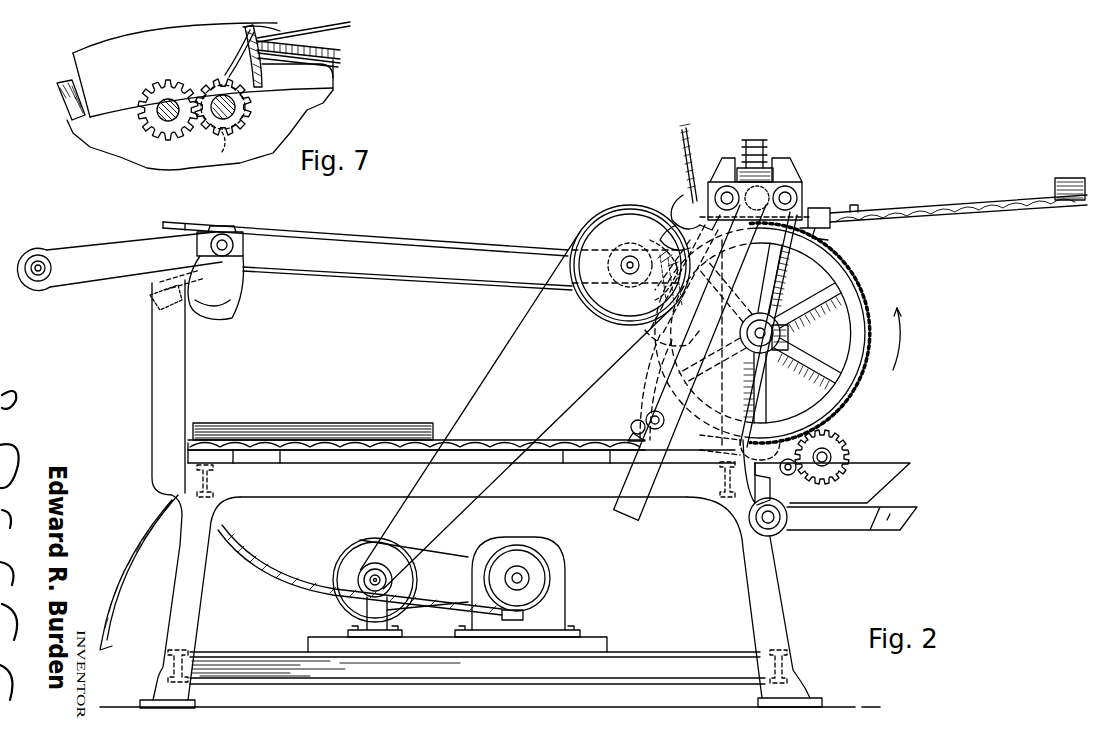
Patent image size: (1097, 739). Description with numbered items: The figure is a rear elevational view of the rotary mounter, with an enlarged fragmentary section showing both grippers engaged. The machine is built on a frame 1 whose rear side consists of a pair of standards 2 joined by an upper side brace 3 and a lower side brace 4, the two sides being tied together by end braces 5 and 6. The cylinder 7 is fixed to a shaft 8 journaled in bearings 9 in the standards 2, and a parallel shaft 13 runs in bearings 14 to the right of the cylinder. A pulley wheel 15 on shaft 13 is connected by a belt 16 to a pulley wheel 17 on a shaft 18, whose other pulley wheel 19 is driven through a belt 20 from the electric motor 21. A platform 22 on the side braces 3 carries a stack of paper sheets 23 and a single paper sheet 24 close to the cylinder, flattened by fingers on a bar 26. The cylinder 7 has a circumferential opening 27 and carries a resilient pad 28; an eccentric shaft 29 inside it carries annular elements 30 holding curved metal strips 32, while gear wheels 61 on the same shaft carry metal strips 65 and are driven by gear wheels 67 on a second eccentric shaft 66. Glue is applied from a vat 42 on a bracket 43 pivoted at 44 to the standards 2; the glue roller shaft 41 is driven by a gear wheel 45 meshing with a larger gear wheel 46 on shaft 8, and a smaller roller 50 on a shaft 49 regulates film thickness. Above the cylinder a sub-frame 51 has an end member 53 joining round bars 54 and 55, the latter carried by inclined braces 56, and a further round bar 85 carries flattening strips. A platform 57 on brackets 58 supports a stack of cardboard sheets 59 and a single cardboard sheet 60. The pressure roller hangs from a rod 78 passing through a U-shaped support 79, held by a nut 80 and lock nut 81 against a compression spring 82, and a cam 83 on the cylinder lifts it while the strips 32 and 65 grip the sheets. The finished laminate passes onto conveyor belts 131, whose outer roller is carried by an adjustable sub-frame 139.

In FIG. 2, the frame 1 is at (138, 383).
In FIG. 2, the standards 2 is at (176, 592).
In FIG. 2, the side brace 3 is at (262, 498).
In FIG. 2, the side brace 4 is at (233, 655).
In FIG. 2, the end brace 5 is at (215, 480).
In FIG. 2, the end brace 6 is at (166, 663).
In FIG. 7, the cylinder 7 is at (333, 70).
In FIG. 2, the cylinder 7 is at (833, 307).
In FIG. 2, the shaft 8 is at (774, 352).
In FIG. 2, the bearings 9 is at (781, 333).
In FIG. 2, the shaft 13 is at (622, 252).
In FIG. 2, the bearings 14 is at (612, 266).
In FIG. 2, the pulley wheel 15 is at (572, 237).
In FIG. 2, the belt 16 is at (514, 318).
In FIG. 2, the pulley wheel 17 is at (356, 562).
In FIG. 2, the shaft 18 is at (342, 580).
In FIG. 2, the pulley wheel 19 is at (356, 540).
In FIG. 2, the belt 20 is at (468, 540).
In FIG. 2, the electric motor 21 is at (524, 546).
In FIG. 2, the platform 22 is at (330, 452).
In FIG. 2, the stack of paper sheets 23 is at (312, 422).
In FIG. 7, the paper sheet 24 is at (352, 52).
In FIG. 2, the paper sheet 24 is at (508, 442).
In FIG. 2, the bar 26 is at (631, 427).
In FIG. 7, the circumferential opening 27 is at (62, 80).
In FIG. 7, the resilient pad 28 is at (325, 44).
In FIG. 7, the shaft 29 is at (254, 108).
In FIG. 7, the annular elements 30 is at (208, 146).
In FIG. 7, the metal strips 32 is at (240, 60).
In FIG. 2, the shaft 41 is at (830, 447).
In FIG. 2, the vat 42 is at (910, 468).
In FIG. 2, the bracket 43 is at (903, 520).
In FIG. 2, the pivotal connection 44 is at (778, 530).
In FIG. 2, the gear wheel 45 is at (850, 443).
In FIG. 2, the gear wheel 46 is at (852, 398).
In FIG. 2, the shaft 49 is at (795, 475).
In FIG. 2, the roller 50 is at (783, 440).
In FIG. 2, the sub-frame 51 is at (816, 177).
In FIG. 2, the end member 53 is at (800, 190).
In FIG. 2, the round bar 54 is at (678, 205).
In FIG. 2, the round bar 55 is at (777, 190).
In FIG. 2, the inclined braces 56 is at (695, 338).
In FIG. 2, the platform 57 is at (935, 220).
In FIG. 2, the brackets 58 is at (832, 238).
In FIG. 2, the stack of cardboard sheets 59 is at (1057, 178).
In FIG. 7, the cardboard sheet 60 is at (320, 22).
In FIG. 2, the cardboard sheet 60 is at (164, 220).
In FIG. 7, the gear wheels 61 is at (215, 88).
In FIG. 7, the metal strips 65 is at (262, 68).
In FIG. 7, the shaft 66 is at (160, 120).
In FIG. 7, the gear wheels 67 is at (155, 88).
In FIG. 2, the rod 78 is at (742, 165).
In FIG. 2, the U-shaped support 79 is at (735, 155).
In FIG. 2, the nut 80 is at (766, 140).
In FIG. 2, the lock nut 81 is at (752, 138).
In FIG. 2, the compression spring 82 is at (772, 158).
In FIG. 7, the cam 83 is at (110, 42).
In FIG. 2, the round bar 85 is at (803, 196).
In FIG. 2, the conveyor belts 131 is at (472, 238).
In FIG. 2, the sub-frame 139 is at (92, 248).